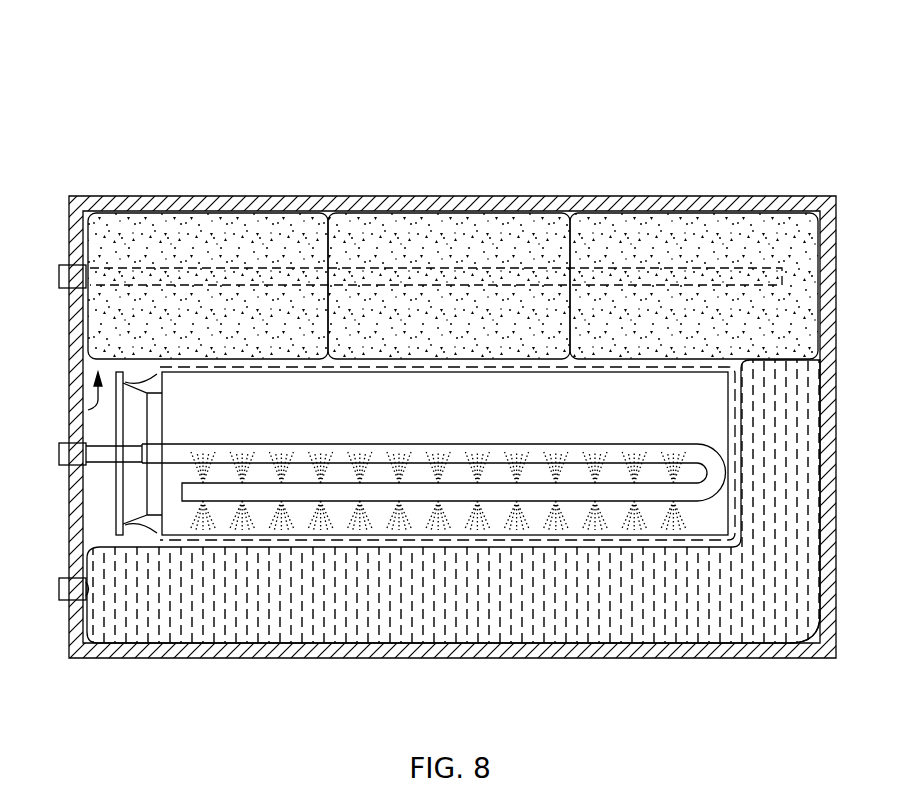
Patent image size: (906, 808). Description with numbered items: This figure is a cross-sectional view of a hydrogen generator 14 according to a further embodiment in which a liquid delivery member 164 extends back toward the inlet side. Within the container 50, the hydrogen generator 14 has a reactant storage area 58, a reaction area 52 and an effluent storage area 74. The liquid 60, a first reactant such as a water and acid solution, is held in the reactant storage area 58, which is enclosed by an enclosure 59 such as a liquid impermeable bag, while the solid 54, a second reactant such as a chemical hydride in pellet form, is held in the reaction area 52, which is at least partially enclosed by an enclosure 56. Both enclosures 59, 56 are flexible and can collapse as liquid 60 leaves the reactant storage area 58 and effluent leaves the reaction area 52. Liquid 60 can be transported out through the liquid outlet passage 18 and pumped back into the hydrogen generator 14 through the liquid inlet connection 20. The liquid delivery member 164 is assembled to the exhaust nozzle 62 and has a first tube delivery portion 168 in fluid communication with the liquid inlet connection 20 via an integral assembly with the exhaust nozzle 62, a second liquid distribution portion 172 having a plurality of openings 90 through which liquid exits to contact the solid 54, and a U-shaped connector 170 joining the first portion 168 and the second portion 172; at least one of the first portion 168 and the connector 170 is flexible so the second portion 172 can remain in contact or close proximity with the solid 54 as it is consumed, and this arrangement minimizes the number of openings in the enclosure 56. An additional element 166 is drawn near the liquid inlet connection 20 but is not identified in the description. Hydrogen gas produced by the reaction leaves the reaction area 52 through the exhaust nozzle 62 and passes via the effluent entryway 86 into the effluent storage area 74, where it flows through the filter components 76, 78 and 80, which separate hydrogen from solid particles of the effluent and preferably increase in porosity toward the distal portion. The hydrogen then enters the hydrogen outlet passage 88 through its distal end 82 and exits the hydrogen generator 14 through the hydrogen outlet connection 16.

The hydrogen generator 14 is at (187, 83).
The hydrogen outlet connection 16 is at (68, 277).
The liquid outlet passage 18 is at (66, 588).
The liquid inlet connection 20 is at (62, 452).
The container 50 is at (768, 197).
The reaction area 52 is at (283, 403).
The solid 54 is at (362, 398).
The enclosure 56 is at (268, 546).
The reactant storage area 58 is at (521, 621).
The enclosure 59 is at (815, 640).
The liquid 60 is at (598, 618).
The exhaust nozzle 62 is at (116, 506).
The effluent storage area 74 is at (146, 231).
The filter component 76 is at (210, 232).
The filter component 78 is at (426, 232).
The filter component 80 is at (668, 235).
The distal end 82 is at (800, 268).
The effluent entryway 86 is at (88, 410).
The hydrogen outlet passage 88 is at (487, 240).
The openings 90 is at (398, 484).
The liquid delivery member 164 is at (656, 446).
The inlet tube 166 is at (100, 458).
The first tube delivery portion 168 is at (211, 446).
The U-shaped connector 170 is at (714, 466).
The second liquid distribution portion 172 is at (383, 502).